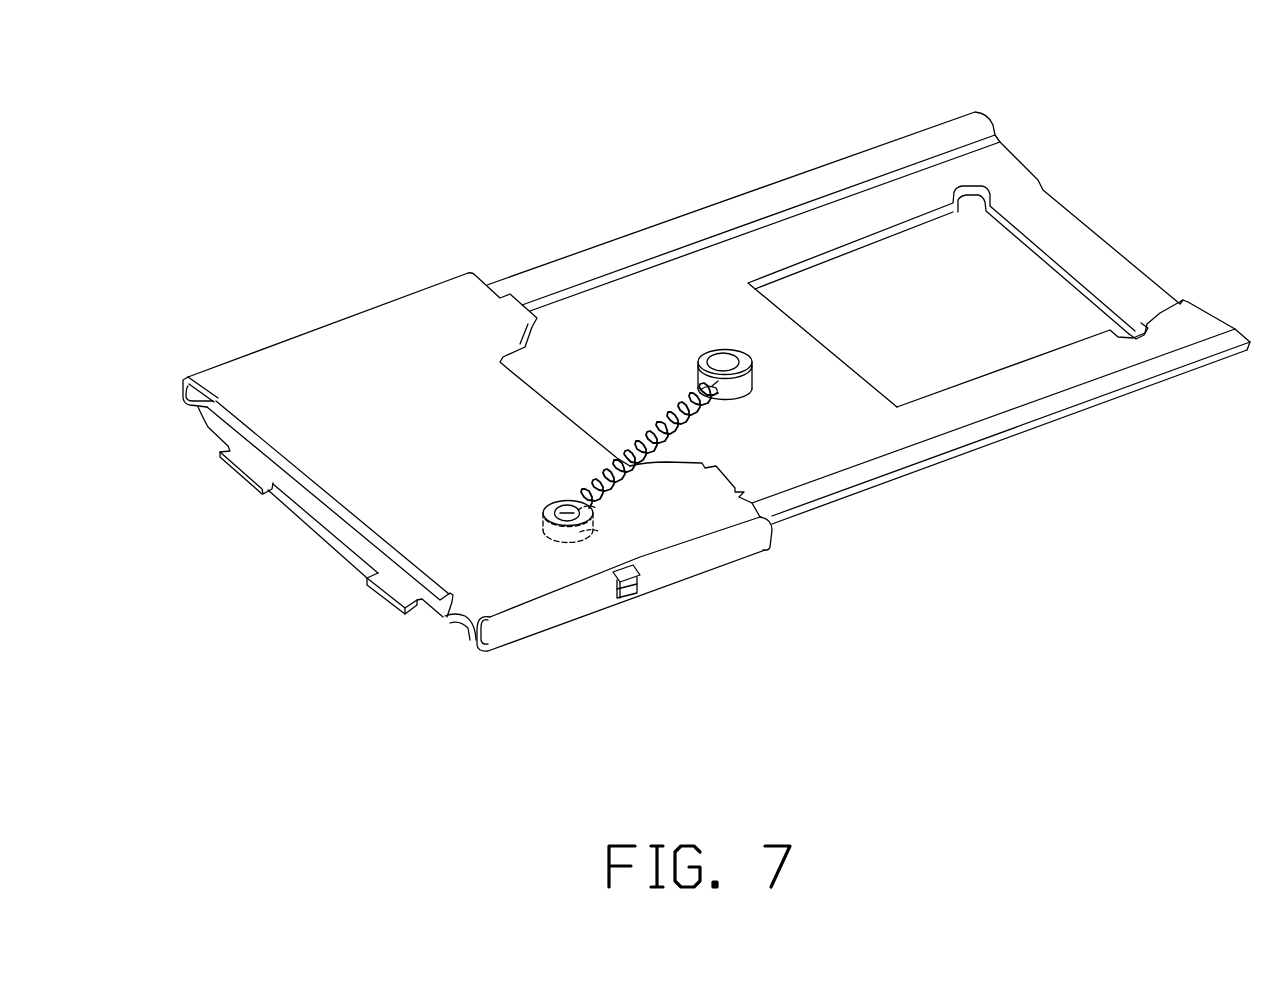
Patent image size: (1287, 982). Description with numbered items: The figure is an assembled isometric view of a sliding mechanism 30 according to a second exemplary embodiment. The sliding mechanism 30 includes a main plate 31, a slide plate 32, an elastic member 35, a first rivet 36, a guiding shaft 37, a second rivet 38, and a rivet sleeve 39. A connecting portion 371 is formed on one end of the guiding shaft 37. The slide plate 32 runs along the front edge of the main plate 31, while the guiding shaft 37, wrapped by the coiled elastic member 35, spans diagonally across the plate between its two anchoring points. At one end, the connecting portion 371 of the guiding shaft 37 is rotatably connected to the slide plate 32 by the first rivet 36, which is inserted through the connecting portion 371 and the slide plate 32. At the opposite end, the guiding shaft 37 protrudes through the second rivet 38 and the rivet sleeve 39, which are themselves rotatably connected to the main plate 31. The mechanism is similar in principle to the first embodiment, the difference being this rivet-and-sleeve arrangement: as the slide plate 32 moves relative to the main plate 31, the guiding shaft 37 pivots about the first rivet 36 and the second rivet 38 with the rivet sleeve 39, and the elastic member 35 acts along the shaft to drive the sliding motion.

The sliding mechanism 30 is at (1097, 126).
The main plate 31 is at (1078, 250).
The slide plate 32 is at (555, 608).
The elastic member 35 is at (647, 430).
The first rivet 36 is at (545, 510).
The guiding shaft 37 is at (678, 398).
The connecting portion 371 is at (577, 532).
The second rivet 38 is at (722, 363).
The rivet sleeve 39 is at (743, 382).